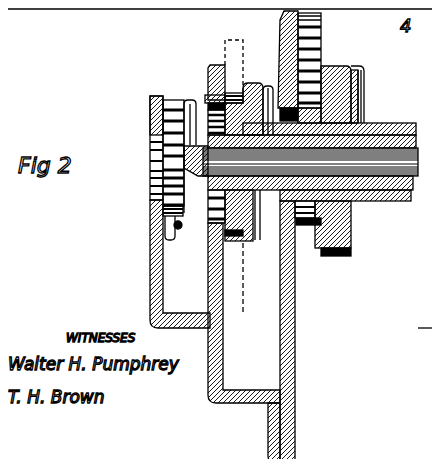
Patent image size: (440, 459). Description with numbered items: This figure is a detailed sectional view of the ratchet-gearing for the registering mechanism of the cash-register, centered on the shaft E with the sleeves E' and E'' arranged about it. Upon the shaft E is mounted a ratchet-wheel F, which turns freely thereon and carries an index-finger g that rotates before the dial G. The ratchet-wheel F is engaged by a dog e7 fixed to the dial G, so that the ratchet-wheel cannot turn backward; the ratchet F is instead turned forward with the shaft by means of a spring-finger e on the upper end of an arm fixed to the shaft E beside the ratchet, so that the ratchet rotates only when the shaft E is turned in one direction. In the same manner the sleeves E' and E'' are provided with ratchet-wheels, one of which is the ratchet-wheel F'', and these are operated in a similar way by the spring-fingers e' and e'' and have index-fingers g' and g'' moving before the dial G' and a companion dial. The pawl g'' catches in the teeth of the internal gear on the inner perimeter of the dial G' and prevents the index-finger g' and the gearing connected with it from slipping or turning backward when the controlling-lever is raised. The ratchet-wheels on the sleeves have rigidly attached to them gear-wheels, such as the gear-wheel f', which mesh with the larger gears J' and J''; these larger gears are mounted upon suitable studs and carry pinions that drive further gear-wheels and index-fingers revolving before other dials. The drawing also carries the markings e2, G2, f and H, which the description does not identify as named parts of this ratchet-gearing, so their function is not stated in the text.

The dial G is at (156, 138).
The spring-finger e is at (179, 145).
The index-finger g is at (162, 147).
The bearing cage e2 is at (186, 118).
The dial G' is at (224, 69).
The index-finger g' is at (213, 96).
The spring-finger e' is at (249, 98).
The index-finger g'' is at (258, 61).
The gear wheel G2 is at (275, 18).
The larger gear J'' is at (336, 78).
The spring-finger e'' is at (372, 94).
The sleeve E' is at (320, 211).
The shaft E is at (317, 162).
The sleeve E'' is at (320, 187).
The hub f is at (234, 251).
The ratchet-wheel F is at (161, 264).
The dog e7 is at (162, 234).
The bracket H is at (287, 306).
The larger gear J' is at (237, 329).
The ratchet-wheel F'' is at (340, 234).
The gear-wheel f' is at (309, 248).